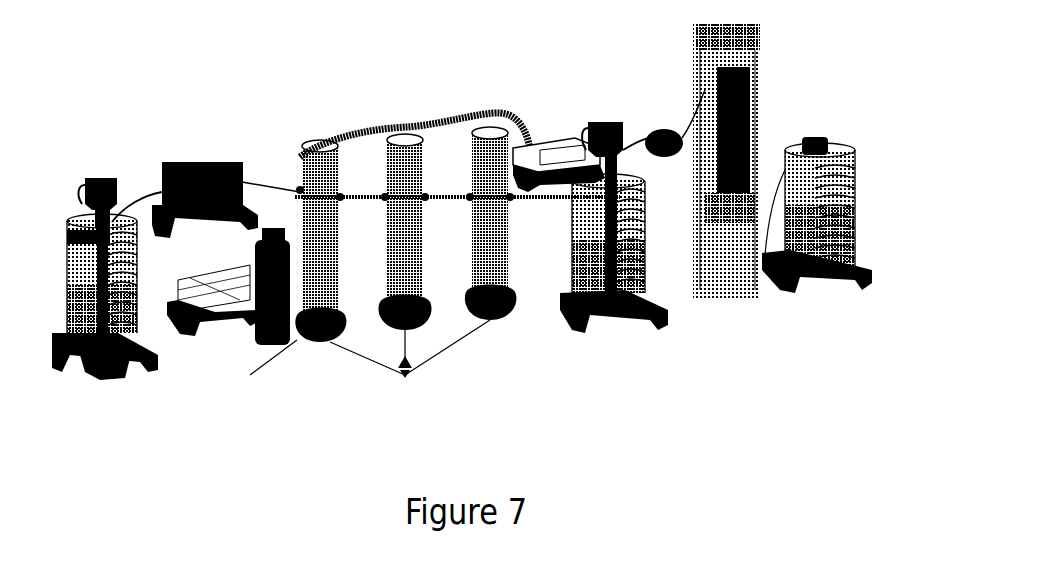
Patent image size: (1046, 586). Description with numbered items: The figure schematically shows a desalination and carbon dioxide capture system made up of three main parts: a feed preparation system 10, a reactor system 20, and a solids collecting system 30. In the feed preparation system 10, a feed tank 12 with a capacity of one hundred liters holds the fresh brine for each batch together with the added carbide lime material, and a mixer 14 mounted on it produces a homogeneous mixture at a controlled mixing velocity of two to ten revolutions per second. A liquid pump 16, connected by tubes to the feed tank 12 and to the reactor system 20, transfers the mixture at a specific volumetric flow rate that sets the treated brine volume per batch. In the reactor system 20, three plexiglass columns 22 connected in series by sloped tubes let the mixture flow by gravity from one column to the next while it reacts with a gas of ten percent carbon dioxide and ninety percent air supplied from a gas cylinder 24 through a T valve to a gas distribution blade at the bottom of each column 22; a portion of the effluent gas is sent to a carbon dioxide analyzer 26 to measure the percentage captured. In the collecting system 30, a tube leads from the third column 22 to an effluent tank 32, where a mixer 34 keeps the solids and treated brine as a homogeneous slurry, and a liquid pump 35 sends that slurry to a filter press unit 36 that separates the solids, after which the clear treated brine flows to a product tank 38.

The feed preparation system 10 is at (160, 96).
The feed tank 12 is at (113, 378).
The mixer 14 is at (102, 173).
The liquid pump 16 is at (207, 163).
The reactor system 20 is at (435, 270).
The plexiglass column 22 is at (412, 150).
The gas cylinder 24 is at (258, 335).
The CO2 analyzer 26 is at (562, 130).
The solids collecting system 30 is at (713, 227).
The effluent tank 32 is at (576, 328).
The mixer 34 is at (603, 127).
The liquid pump 35 is at (663, 128).
The filter press unit 36 is at (762, 84).
The product tank 38 is at (835, 138).